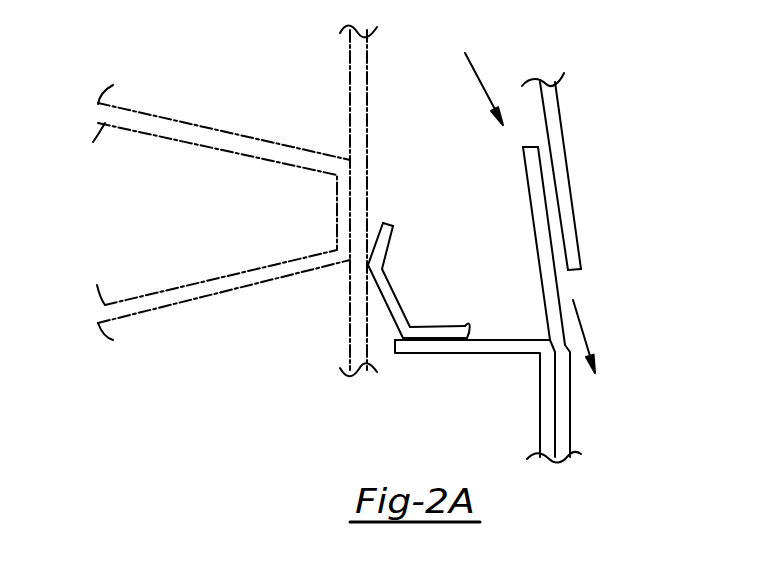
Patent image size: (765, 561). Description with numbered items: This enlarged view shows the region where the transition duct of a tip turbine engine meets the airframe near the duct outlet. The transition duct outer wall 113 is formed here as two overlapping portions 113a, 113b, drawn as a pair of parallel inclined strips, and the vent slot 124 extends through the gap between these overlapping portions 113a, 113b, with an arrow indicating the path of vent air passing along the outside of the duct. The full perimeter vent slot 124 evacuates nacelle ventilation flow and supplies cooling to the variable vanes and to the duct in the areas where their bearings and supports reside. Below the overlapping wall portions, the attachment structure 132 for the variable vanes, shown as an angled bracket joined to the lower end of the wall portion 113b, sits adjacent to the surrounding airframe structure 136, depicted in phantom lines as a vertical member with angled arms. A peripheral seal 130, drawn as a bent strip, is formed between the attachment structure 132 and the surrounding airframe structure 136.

The surrounding airframe structure 136 is at (367, 103).
The peripheral seal 130 is at (398, 295).
The attachment structure 132 is at (510, 340).
The wall 113 is at (550, 268).
The overlapping portion 113a is at (557, 200).
The overlapping portion 113b is at (545, 211).
The vent slot 124 is at (542, 125).